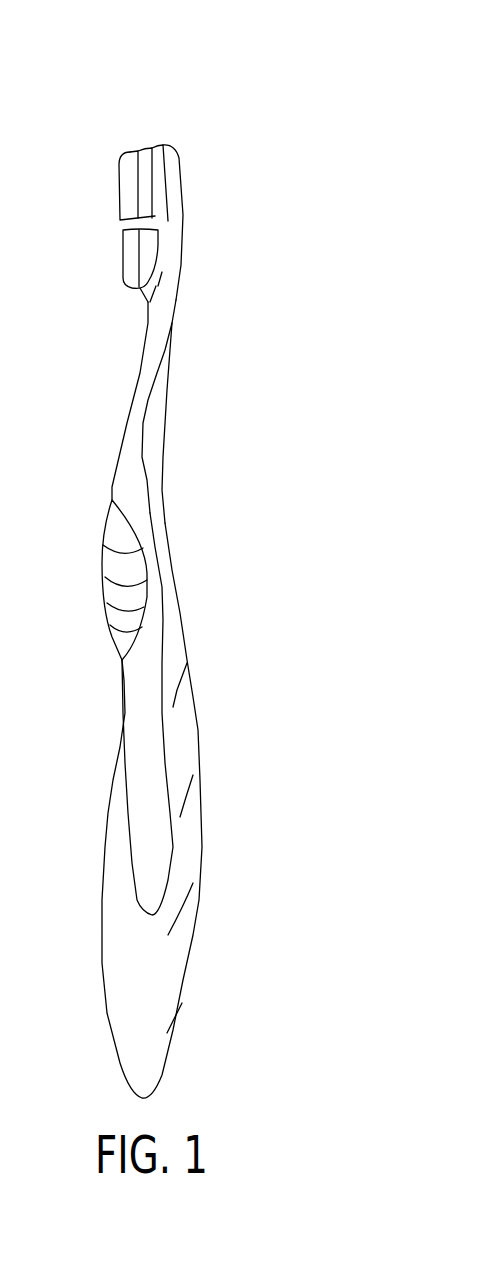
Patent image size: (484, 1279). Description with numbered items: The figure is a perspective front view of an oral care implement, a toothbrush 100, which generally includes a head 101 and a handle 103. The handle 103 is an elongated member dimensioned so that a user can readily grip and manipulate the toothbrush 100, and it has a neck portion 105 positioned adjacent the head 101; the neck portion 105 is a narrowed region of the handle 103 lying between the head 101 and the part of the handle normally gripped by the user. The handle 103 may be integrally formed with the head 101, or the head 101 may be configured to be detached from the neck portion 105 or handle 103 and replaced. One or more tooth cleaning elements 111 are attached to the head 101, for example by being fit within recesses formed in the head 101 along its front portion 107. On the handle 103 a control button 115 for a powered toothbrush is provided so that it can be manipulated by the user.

The toothbrush 100 is at (195, 86).
The head 101 is at (177, 168).
The handle 103 is at (160, 833).
The neck portion 105 is at (158, 423).
The front portion 107 is at (142, 148).
The tooth cleaning elements 111 is at (130, 247).
The control button 115 is at (102, 573).